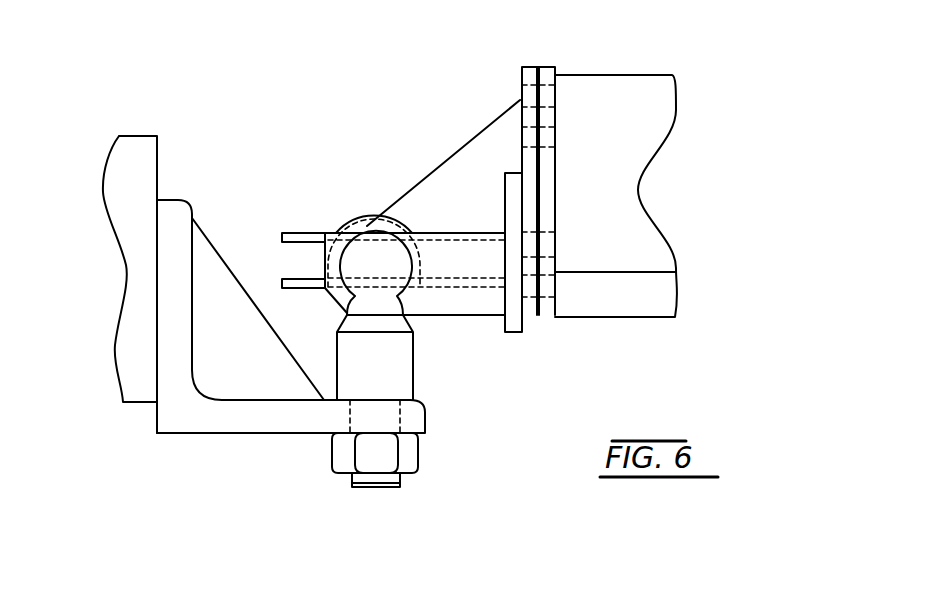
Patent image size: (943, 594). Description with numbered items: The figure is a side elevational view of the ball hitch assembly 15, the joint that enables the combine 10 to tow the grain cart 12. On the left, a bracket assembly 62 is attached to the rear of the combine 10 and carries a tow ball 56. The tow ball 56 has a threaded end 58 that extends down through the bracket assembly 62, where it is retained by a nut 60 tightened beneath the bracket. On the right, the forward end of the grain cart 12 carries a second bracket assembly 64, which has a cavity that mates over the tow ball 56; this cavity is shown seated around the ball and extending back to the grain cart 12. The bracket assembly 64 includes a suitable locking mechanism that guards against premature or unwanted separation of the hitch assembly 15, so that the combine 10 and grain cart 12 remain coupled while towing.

The combine 10 is at (118, 134).
The grain cart 12 is at (627, 72).
The ball hitch assembly 15 is at (323, 178).
The tow ball 56 is at (407, 354).
The threaded end 58 is at (382, 487).
The nut 60 is at (413, 452).
The bracket assembly 62 is at (422, 412).
The bracket assembly 64 is at (457, 150).